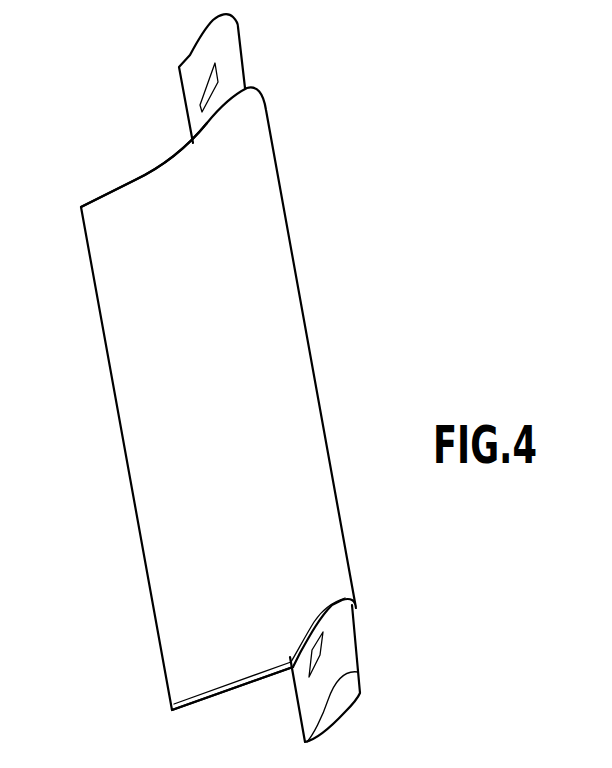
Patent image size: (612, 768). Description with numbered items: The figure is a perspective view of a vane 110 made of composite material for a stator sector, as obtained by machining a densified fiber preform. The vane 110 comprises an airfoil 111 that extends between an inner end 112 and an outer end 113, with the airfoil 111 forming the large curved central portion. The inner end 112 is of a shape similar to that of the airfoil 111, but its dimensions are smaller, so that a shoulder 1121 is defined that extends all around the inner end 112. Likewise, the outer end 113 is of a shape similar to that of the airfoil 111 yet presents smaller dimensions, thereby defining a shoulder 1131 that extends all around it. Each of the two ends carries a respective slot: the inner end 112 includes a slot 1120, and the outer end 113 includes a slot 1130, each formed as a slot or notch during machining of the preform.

The vane 110 is at (256, 378).
The airfoil 111 is at (252, 232).
The inner end 112 is at (345, 650).
The outer end 113 is at (236, 50).
The slot 1120 is at (315, 667).
The shoulder 1121 is at (234, 689).
The slot 1130 is at (209, 95).
The shoulder 1131 is at (135, 180).